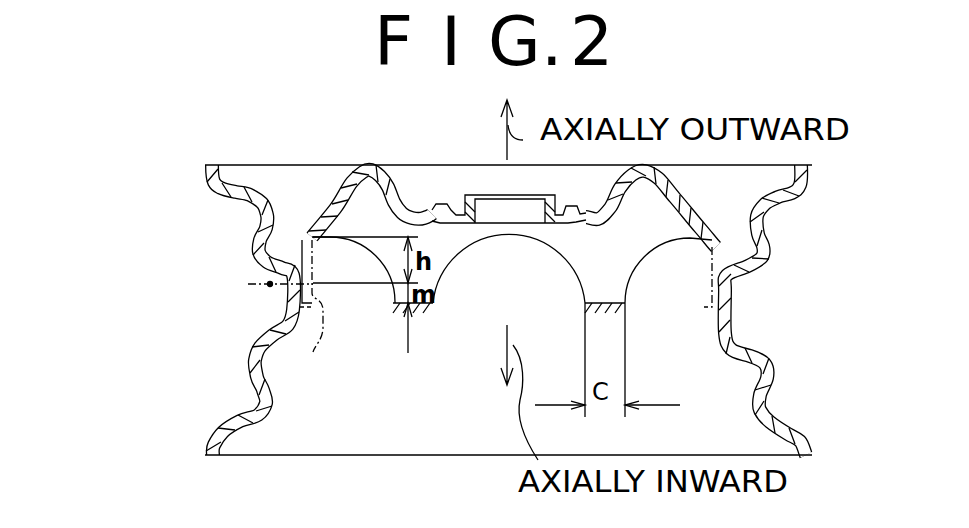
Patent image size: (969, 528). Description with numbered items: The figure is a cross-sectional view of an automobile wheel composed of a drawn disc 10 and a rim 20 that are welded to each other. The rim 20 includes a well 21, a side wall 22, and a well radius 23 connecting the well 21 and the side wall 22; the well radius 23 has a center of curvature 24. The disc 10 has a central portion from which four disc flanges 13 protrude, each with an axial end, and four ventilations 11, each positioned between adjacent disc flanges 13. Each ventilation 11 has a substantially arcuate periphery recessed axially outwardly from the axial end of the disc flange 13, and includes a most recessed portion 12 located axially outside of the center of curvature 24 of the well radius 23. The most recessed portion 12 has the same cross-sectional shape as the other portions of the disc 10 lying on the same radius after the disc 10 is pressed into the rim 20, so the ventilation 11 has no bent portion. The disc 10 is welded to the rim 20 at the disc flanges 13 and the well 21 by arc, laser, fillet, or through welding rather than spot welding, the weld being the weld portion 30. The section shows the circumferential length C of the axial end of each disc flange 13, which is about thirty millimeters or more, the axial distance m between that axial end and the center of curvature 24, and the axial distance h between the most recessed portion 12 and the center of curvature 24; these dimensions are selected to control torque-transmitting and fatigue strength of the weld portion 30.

The disc 10 is at (349, 172).
The ventilation 11 is at (373, 259).
The most recessed portion 12 is at (507, 236).
The disc flange 13 is at (603, 303).
The rim 20 is at (207, 172).
The well 21 is at (283, 310).
The side wall 22 is at (258, 268).
The well radius 23 is at (268, 284).
The center of curvature 24 is at (276, 275).
The weld portion 30 is at (413, 312).